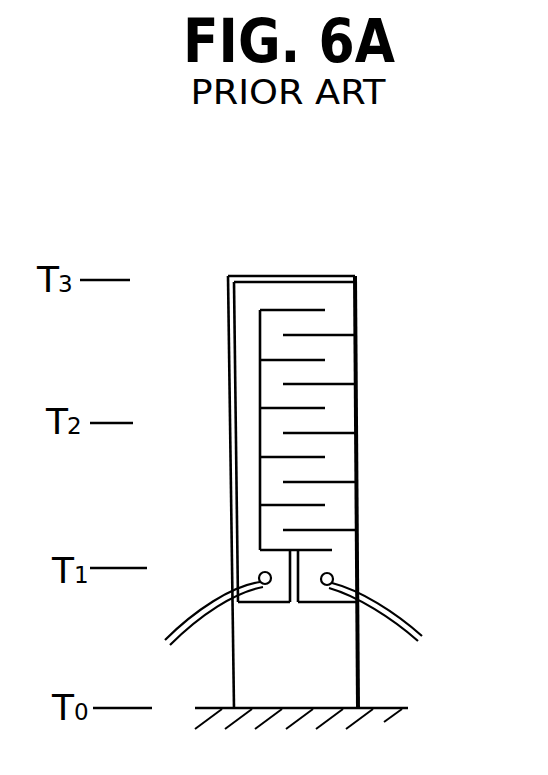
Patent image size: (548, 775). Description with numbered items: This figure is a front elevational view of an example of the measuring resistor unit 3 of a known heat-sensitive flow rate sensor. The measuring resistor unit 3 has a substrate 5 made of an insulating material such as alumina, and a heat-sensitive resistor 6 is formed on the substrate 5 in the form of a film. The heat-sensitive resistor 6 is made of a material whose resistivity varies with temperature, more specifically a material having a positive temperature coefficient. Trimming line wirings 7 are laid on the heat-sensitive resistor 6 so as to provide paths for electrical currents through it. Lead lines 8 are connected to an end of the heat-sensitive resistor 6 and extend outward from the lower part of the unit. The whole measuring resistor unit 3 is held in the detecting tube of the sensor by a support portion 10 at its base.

The measuring resistor unit 3 is at (317, 257).
The substrate 5 is at (334, 663).
The heat-sensitive resistor 6 is at (356, 410).
The trimming line wirings 7 is at (259, 400).
The lead lines 8 is at (192, 606).
The support portion 10 is at (395, 723).